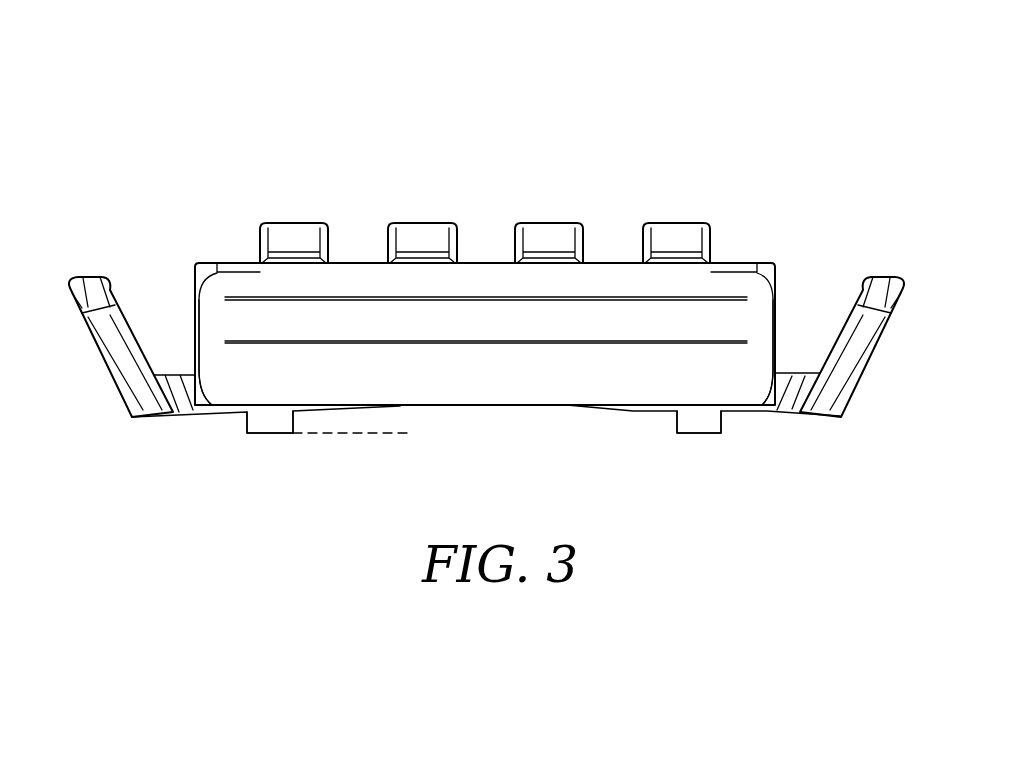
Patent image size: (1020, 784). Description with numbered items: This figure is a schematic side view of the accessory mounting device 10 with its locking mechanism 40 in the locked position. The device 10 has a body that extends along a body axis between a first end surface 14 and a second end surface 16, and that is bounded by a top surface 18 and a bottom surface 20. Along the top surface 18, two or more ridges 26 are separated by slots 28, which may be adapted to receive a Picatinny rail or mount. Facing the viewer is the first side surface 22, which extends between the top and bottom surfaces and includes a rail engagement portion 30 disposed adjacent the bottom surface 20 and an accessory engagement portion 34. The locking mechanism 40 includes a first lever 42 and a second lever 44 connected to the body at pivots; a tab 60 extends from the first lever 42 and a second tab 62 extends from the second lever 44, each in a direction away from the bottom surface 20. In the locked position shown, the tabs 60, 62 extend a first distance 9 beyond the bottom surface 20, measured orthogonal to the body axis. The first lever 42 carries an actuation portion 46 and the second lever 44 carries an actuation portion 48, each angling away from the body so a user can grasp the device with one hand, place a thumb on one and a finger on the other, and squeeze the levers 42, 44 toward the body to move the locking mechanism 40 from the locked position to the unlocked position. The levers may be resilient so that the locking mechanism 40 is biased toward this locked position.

The accessory mounting device 10 is at (475, 324).
The top surface 18 is at (578, 92).
The first side surface 22 is at (540, 370).
The accessory engagement portion 34 is at (245, 287).
The first end surface 14 is at (197, 383).
The second end surface 16 is at (765, 392).
The rail engagement portion 30 is at (243, 378).
The ridges 26 is at (293, 222).
The slots 28 is at (358, 240).
The bottom surface 20 is at (640, 412).
The tab 60 is at (272, 433).
The second tab 62 is at (703, 433).
The first distance 9 is at (384, 365).
The locking mechanism 40 is at (94, 326).
The first lever 42 is at (87, 270).
The actuation portion 46 is at (88, 338).
The second lever 44 is at (880, 266).
The actuation portion 48 is at (868, 365).